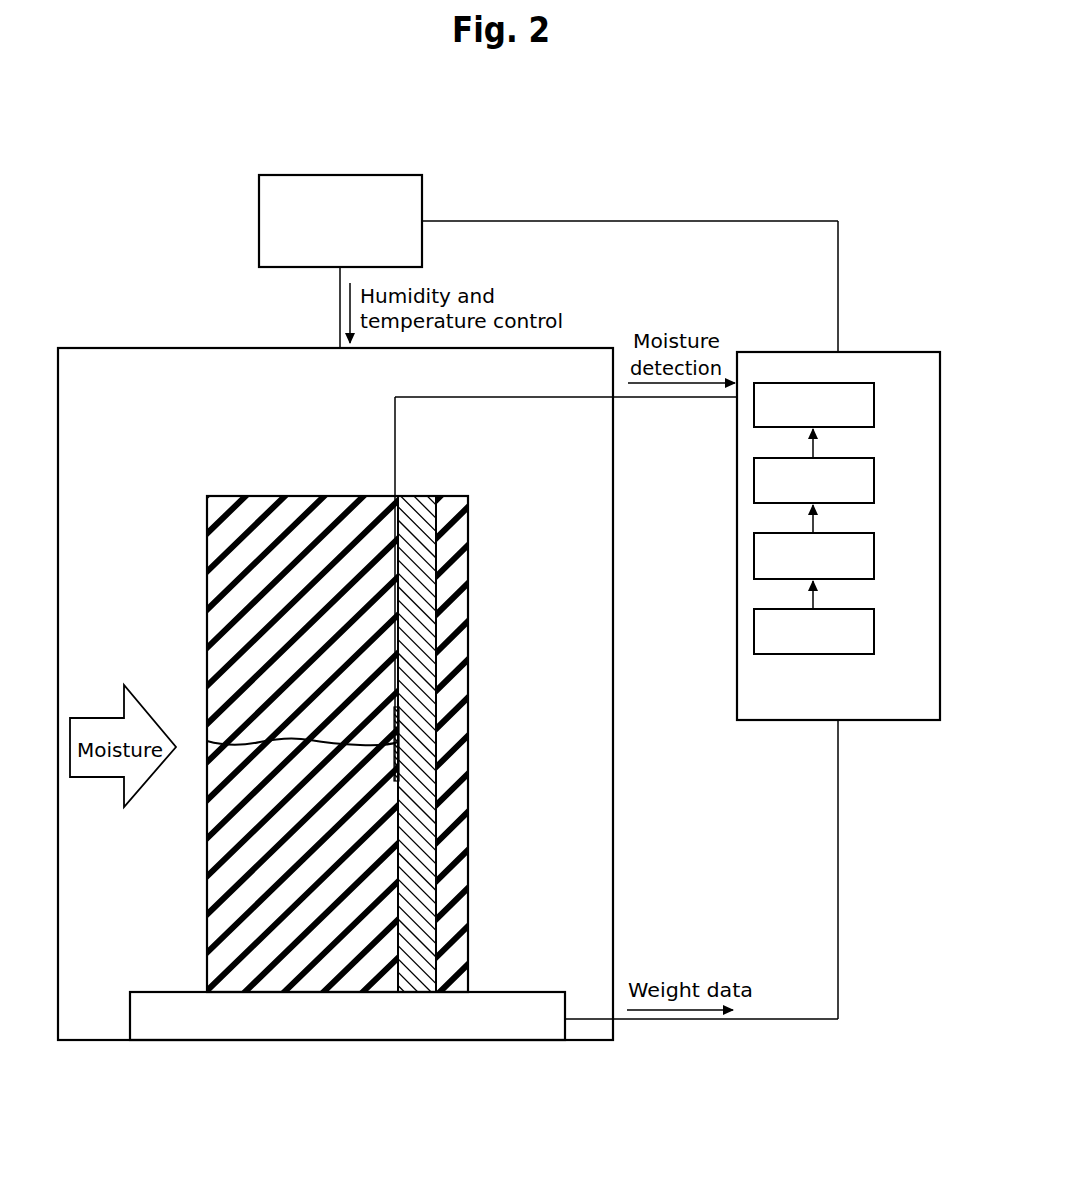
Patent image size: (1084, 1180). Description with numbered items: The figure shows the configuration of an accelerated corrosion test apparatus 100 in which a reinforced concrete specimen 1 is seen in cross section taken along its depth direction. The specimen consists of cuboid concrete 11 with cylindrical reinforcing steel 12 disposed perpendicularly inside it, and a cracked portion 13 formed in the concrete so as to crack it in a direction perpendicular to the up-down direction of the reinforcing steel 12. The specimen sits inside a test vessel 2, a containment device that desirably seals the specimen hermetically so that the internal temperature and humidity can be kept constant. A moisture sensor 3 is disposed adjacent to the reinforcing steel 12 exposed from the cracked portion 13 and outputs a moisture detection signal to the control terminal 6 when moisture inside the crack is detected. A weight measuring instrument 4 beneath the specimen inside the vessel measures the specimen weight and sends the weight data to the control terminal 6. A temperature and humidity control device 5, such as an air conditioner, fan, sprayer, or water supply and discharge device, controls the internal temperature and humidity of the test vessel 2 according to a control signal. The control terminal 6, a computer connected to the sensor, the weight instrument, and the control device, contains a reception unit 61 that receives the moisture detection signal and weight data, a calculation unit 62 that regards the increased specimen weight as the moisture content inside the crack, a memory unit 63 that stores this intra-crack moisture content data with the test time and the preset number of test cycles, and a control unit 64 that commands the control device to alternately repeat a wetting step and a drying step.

The accelerated corrosion test apparatus 100 is at (547, 108).
The reinforced concrete specimen 1 is at (337, 696).
The concrete 11 is at (214, 590).
The reinforcing steel 12 is at (422, 586).
The cracked portion 13 is at (211, 736).
The test vessel 2 is at (581, 347).
The moisture sensor 3 is at (400, 766).
The weight measuring instrument 4 is at (531, 991).
The temperature and humidity control device 5 is at (341, 173).
The control terminal 6 is at (838, 506).
The reception unit 61 is at (876, 632).
The calculation unit 62 is at (876, 557).
The memory unit 63 is at (876, 480).
The control unit 64 is at (876, 405).